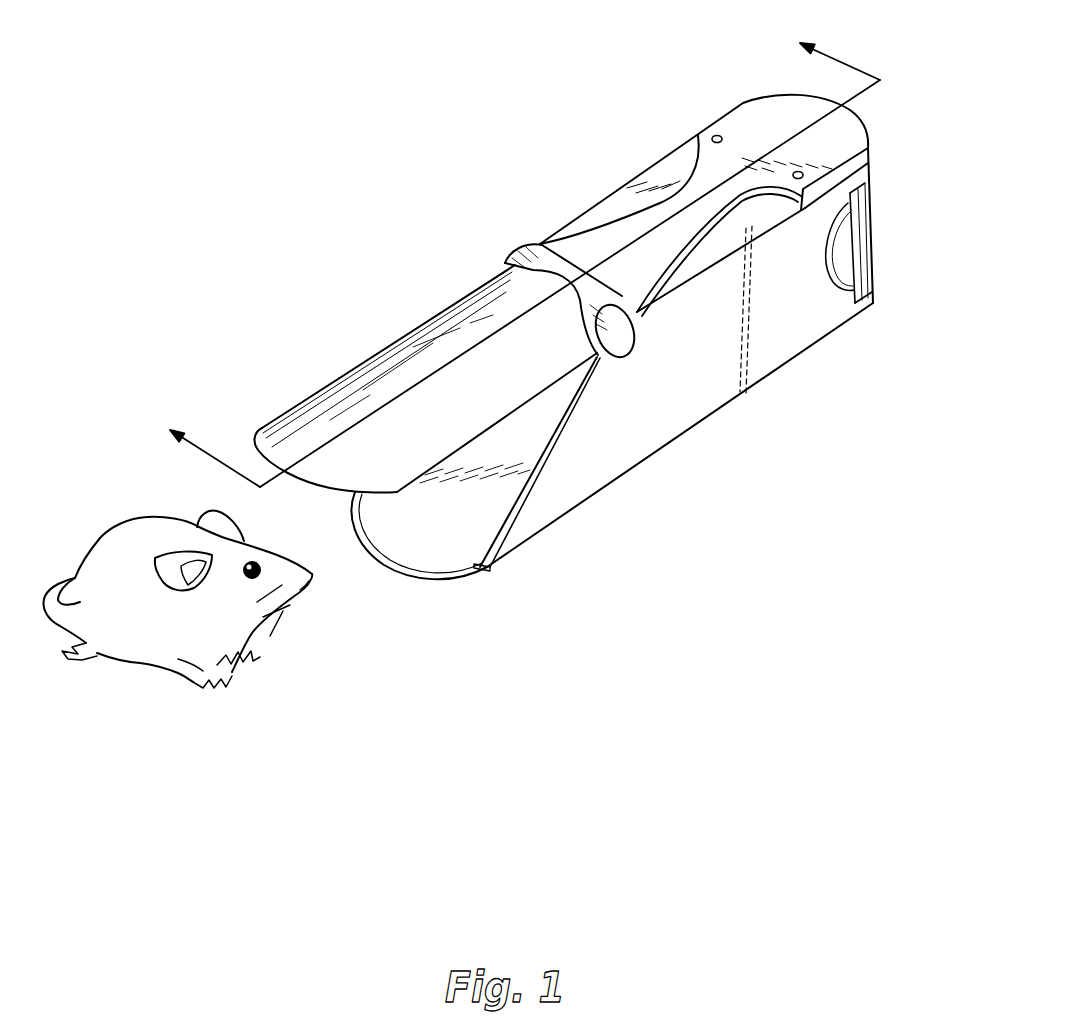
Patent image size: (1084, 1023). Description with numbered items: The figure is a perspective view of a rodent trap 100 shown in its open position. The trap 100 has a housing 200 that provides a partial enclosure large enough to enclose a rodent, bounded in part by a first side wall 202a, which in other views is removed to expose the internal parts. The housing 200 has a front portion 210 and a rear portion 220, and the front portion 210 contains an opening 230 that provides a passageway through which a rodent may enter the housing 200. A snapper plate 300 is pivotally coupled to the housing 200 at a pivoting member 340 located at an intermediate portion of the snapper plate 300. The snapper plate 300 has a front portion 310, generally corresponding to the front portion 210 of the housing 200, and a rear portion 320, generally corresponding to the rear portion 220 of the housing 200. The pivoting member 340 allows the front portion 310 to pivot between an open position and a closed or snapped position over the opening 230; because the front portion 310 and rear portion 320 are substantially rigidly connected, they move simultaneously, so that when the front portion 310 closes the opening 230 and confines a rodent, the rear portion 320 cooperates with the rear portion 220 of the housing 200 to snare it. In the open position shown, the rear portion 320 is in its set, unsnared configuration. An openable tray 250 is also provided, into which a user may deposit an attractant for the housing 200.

The trap 100 is at (579, 109).
The housing 200 is at (752, 355).
The first side wall 202a is at (648, 435).
The front portion of the housing 210 is at (443, 550).
The rear portion of the housing 220 is at (826, 311).
The opening 230 is at (490, 485).
The openable tray 250 is at (863, 214).
The snapper plate 300 is at (380, 366).
The front portion of the snapper plate 310 is at (273, 432).
The rear portion of the snapper plate 320 is at (763, 110).
The pivoting member 340 is at (523, 250).